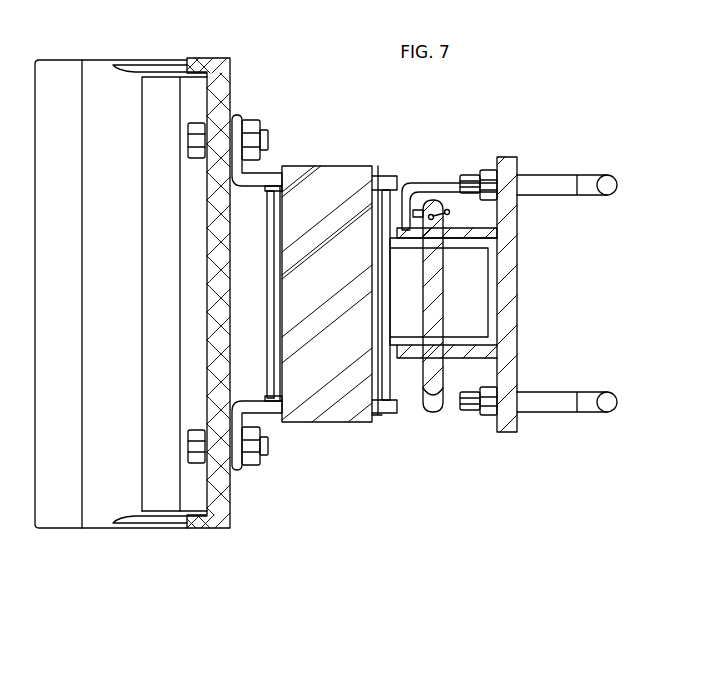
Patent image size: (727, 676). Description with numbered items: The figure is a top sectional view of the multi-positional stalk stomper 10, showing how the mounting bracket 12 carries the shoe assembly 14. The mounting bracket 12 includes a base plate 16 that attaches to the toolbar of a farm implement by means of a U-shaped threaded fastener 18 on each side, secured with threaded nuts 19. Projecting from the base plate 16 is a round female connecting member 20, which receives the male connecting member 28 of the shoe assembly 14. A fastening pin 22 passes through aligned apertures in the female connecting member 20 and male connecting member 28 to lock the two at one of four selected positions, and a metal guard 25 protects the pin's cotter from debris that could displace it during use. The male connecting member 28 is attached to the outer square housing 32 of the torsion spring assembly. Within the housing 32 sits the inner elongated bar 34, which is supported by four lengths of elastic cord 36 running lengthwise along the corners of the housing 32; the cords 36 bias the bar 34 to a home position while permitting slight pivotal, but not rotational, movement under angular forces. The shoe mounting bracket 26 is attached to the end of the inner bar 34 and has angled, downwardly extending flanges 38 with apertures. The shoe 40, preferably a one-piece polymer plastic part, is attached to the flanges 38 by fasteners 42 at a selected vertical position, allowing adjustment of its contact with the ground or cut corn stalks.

The multi-positional stalk stomper 10 is at (351, 576).
The mounting bracket 12 is at (549, 248).
The shoe assembly 14 is at (726, 665).
The base plate 16 is at (518, 287).
The U-shaped threaded fastener 18 is at (603, 180).
The threaded nuts 19 is at (485, 170).
The female connecting member 20 is at (488, 230).
The fastening pin 22 is at (430, 412).
The metal guard 25 is at (423, 183).
The shoe mounting bracket 26 is at (273, 418).
The male connecting member 28 is at (467, 252).
The outer square housing 32 is at (268, 334).
The inner elongated bar 34 is at (318, 167).
The elastic cord 36 is at (272, 236).
The flanges 38 is at (233, 116).
The shoe 40 is at (95, 528).
The fasteners 42 is at (188, 128).